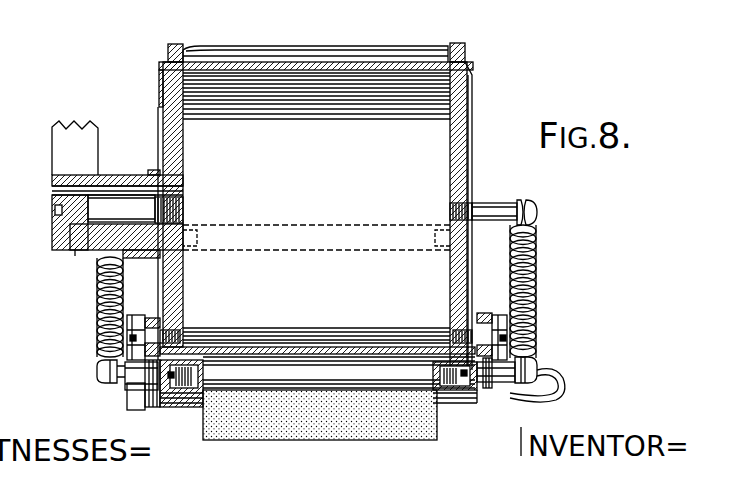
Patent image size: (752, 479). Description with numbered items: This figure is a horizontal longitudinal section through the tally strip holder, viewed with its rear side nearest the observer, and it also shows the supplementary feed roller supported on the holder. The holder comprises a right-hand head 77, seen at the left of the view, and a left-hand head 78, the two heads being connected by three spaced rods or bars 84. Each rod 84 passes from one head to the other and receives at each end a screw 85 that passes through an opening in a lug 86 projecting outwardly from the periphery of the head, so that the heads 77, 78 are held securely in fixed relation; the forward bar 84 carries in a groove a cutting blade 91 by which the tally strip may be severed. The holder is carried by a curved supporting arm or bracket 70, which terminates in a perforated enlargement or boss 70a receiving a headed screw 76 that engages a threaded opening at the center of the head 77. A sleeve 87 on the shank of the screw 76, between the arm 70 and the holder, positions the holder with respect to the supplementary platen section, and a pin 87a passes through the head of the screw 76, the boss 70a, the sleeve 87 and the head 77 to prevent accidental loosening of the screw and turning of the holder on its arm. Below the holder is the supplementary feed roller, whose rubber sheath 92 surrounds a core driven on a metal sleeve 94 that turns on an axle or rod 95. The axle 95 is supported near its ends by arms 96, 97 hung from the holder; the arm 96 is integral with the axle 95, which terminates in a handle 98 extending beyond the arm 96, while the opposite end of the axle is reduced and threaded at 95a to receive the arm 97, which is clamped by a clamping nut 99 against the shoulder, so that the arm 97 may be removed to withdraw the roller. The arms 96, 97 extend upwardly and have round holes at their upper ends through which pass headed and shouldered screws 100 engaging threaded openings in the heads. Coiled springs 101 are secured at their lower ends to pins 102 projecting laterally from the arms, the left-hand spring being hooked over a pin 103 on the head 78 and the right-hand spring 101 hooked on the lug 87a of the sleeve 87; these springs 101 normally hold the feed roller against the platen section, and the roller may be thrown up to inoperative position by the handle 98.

The cutting blade 91 is at (283, 54).
The right-hand head 77 is at (184, 148).
The left-hand head 78 is at (450, 272).
The supporting arm or bracket 70 is at (75, 148).
The sleeve 87 is at (107, 177).
The pin 87a is at (52, 192).
The headed screw 76 is at (121, 208).
The screw 85 is at (192, 229).
The rods or bars 84 is at (295, 225).
The pin 103 is at (487, 203).
The coiled springs 101 is at (97, 293).
The headed and shouldered screws 100 is at (135, 316).
The enlargement or boss 70a is at (75, 251).
The pins 102 is at (97, 372).
The reduced threaded end of axle 95a is at (125, 388).
The clamping nut 99 is at (130, 401).
The arm 97 is at (152, 407).
The lug 86 is at (178, 389).
The sheath 92 is at (380, 440).
The metal sleeve 94 is at (440, 402).
The axle or rod 95 is at (483, 390).
The arm 96 is at (488, 394).
The handle 98 is at (546, 401).